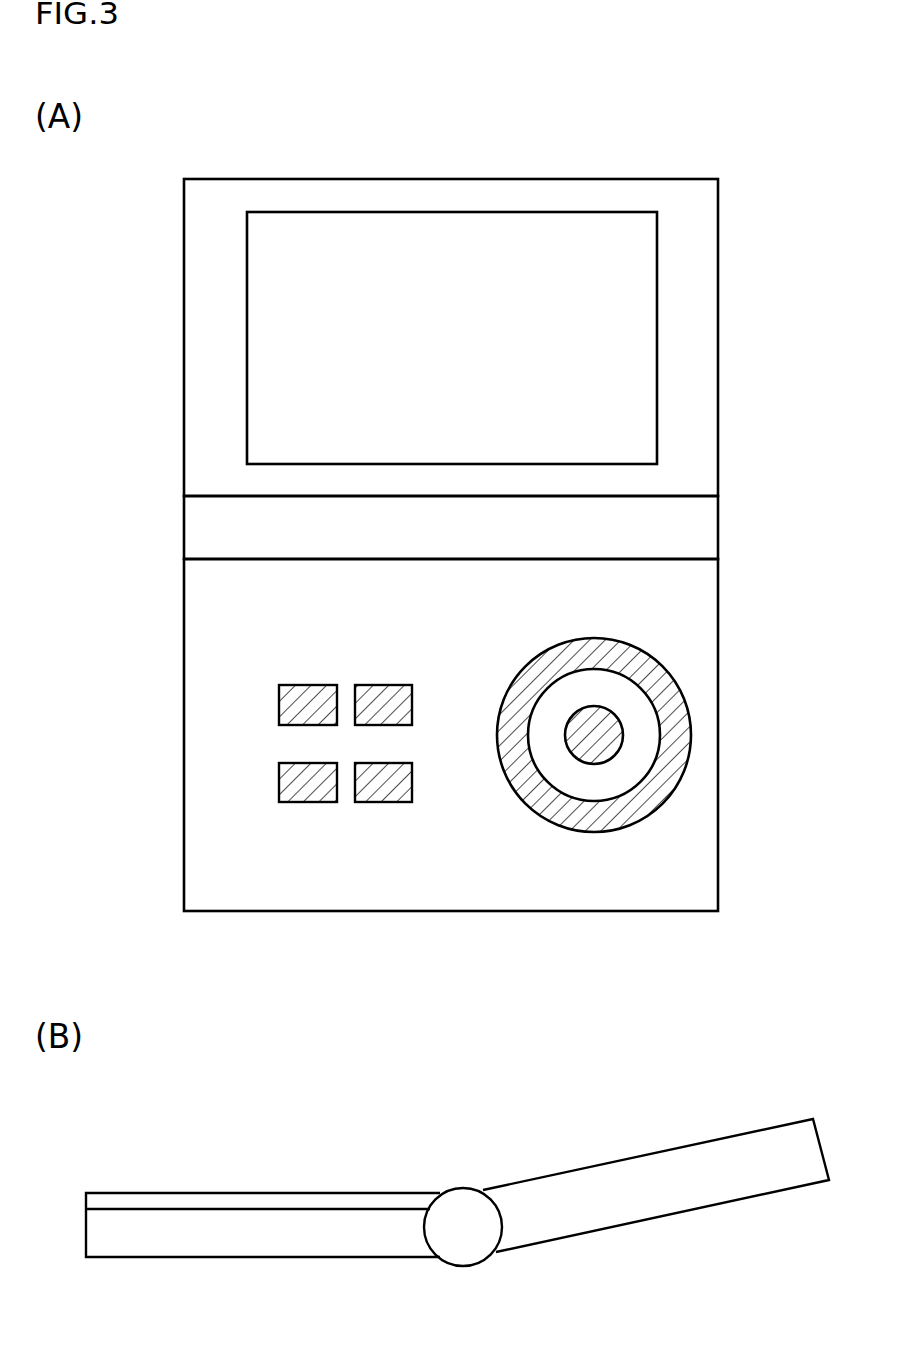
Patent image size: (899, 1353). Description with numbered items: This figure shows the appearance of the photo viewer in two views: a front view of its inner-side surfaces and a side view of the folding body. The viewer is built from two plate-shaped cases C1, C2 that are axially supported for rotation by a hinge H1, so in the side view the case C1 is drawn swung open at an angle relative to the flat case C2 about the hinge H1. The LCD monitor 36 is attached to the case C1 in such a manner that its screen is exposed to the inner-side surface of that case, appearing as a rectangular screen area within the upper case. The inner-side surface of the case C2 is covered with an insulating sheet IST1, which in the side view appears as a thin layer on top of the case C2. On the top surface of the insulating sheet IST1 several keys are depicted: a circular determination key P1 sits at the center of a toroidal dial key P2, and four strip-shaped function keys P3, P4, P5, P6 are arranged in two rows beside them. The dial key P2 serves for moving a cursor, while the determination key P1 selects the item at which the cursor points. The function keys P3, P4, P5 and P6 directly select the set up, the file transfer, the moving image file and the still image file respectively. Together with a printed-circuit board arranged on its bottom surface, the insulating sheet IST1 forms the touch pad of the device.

The LCD monitor 36 is at (642, 321).
The case C1 is at (184, 330).
The case C2 is at (184, 678).
The hinge H1 is at (718, 533).
The insulating sheet IST1 is at (686, 852).
The determination key P1 is at (575, 754).
The dial key P2 is at (650, 652).
The function key P3 is at (300, 688).
The function key P4 is at (383, 688).
The function key P5 is at (308, 800).
The function key P6 is at (390, 800).